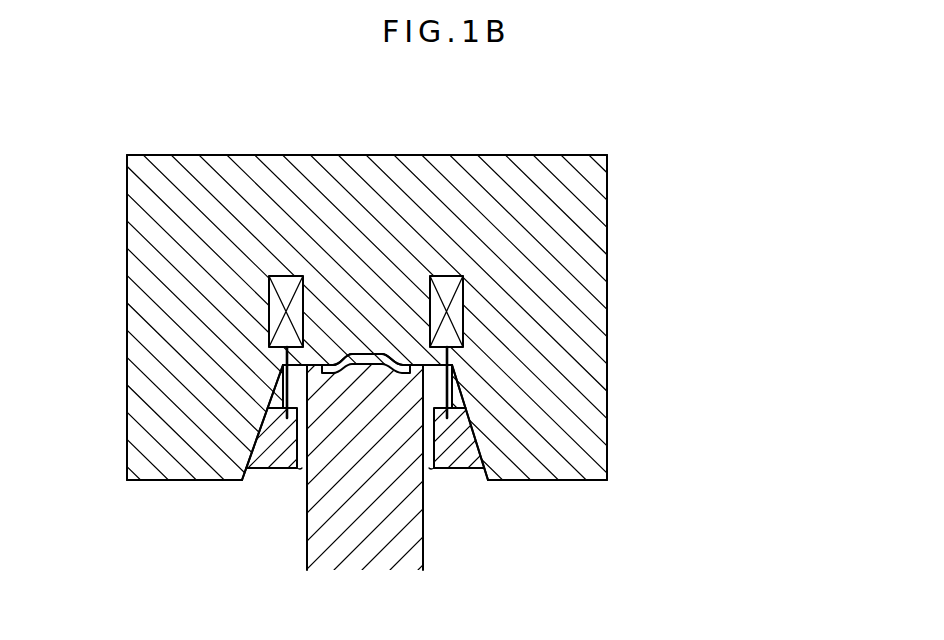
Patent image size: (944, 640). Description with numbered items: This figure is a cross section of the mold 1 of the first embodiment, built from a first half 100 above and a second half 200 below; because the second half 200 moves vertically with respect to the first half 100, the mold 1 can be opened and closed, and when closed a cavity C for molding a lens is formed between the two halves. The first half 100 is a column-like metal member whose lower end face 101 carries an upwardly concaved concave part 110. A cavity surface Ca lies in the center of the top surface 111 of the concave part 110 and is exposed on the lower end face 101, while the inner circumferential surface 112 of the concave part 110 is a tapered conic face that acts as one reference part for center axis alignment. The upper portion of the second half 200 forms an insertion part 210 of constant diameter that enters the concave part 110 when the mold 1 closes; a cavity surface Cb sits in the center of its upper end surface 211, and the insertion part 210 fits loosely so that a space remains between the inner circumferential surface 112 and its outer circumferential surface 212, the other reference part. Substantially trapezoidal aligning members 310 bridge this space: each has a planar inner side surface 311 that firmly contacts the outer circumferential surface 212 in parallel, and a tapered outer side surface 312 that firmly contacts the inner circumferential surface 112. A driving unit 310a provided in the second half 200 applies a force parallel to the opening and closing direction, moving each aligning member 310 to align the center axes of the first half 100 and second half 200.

The mold 1 is at (636, 181).
The first half 100 is at (621, 194).
The lower end face 101 is at (162, 481).
The concave part 110 is at (261, 488).
The top surface 111 is at (440, 364).
The inner circumferential surface 112 is at (274, 388).
The second half 200 is at (436, 556).
The insertion part 210 is at (402, 396).
The upper end surface 211 is at (318, 362).
The outer circumferential surface 212 is at (425, 386).
The aligning member 310 is at (268, 418).
The driving unit 310a is at (270, 317).
The inner side surface 311 is at (298, 469).
The outer side surface 312 is at (277, 462).
The cavity C is at (356, 358).
The cavity surface Ca is at (393, 357).
The cavity surface Cb is at (356, 365).